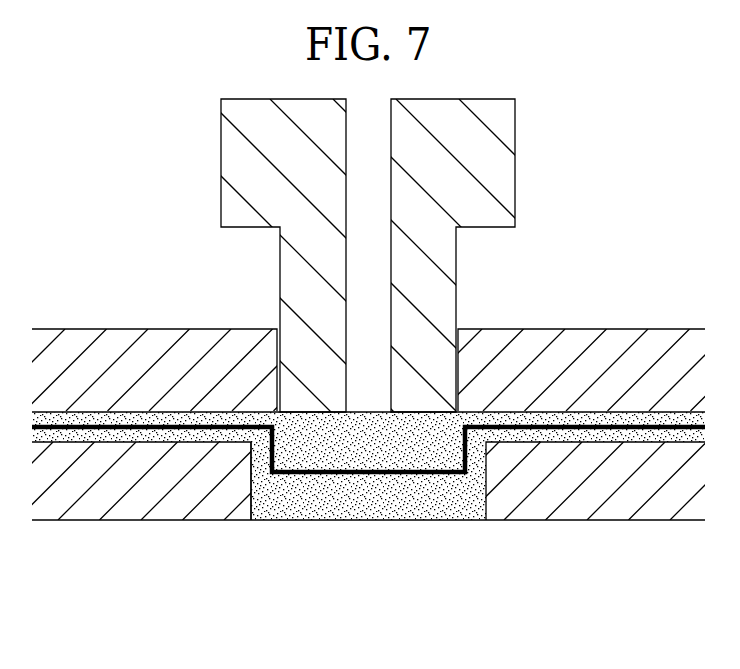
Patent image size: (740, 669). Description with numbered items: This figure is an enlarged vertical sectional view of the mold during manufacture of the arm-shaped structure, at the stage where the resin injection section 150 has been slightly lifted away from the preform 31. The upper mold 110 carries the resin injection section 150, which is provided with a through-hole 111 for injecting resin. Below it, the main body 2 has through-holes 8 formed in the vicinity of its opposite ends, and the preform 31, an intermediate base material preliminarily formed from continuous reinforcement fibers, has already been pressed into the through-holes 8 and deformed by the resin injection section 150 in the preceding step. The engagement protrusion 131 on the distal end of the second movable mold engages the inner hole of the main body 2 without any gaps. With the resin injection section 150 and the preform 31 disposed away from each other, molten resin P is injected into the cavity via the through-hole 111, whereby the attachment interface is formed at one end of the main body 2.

The resin injection section 150 is at (195, 151).
The through-hole 111 is at (391, 170).
The upper mold 110 is at (94, 328).
The preform 31 is at (551, 427).
The main body 2 is at (87, 544).
The through-holes 8 is at (252, 508).
The molten resin P is at (327, 495).
The engagement protrusion 131 is at (373, 517).